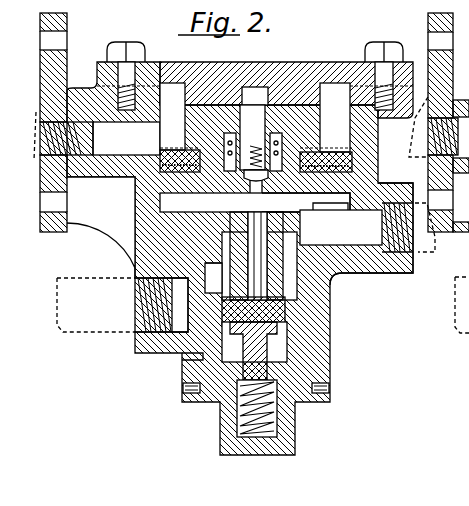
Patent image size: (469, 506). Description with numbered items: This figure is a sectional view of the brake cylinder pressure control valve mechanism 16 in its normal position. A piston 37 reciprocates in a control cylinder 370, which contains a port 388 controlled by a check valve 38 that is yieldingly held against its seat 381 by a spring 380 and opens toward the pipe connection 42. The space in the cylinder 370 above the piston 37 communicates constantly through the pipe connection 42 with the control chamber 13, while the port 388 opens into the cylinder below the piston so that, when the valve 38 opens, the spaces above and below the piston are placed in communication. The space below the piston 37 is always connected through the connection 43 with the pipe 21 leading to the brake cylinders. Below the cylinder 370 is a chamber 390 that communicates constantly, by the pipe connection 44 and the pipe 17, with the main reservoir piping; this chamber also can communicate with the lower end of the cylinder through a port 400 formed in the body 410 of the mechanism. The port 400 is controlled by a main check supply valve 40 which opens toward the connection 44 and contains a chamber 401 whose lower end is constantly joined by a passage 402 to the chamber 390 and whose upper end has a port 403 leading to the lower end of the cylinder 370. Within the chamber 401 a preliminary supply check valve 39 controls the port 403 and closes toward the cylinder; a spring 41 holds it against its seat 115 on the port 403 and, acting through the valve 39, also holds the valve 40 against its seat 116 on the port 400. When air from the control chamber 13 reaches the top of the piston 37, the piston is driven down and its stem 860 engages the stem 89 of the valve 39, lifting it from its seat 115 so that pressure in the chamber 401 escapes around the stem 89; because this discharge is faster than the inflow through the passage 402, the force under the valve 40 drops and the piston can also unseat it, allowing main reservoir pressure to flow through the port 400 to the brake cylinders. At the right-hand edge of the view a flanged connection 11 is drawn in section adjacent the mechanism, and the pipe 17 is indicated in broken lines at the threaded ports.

The right pipe flange 11 is at (430, 100).
The control chamber 13 is at (70, 62).
The brake cylinder pressure control valve mechanism 16 is at (101, 245).
The pipe 17 is at (257, 320).
The pipe 21 is at (415, 241).
The piston 37 is at (157, 184).
The check valve 38 is at (190, 142).
The preliminary supply check valve 39 is at (297, 337).
The main check supply valve 40 is at (295, 287).
The spring 41 is at (237, 414).
The pipe connection 42 is at (68, 136).
The connection 43 is at (375, 238).
The pipe connection 44 is at (172, 288).
The stem 89 is at (245, 203).
The seat 115 is at (207, 280).
The seat 116 is at (204, 236).
The control cylinder 370 is at (375, 163).
The spring 380 is at (196, 148).
The seat 381 is at (330, 215).
The port 388 is at (347, 202).
The chamber 390 is at (295, 357).
The port 400 is at (292, 243).
The chamber 401 is at (235, 309).
The passage 402 is at (205, 355).
The port 403 is at (248, 238).
The body 410 is at (331, 283).
The stem 860 is at (264, 205).